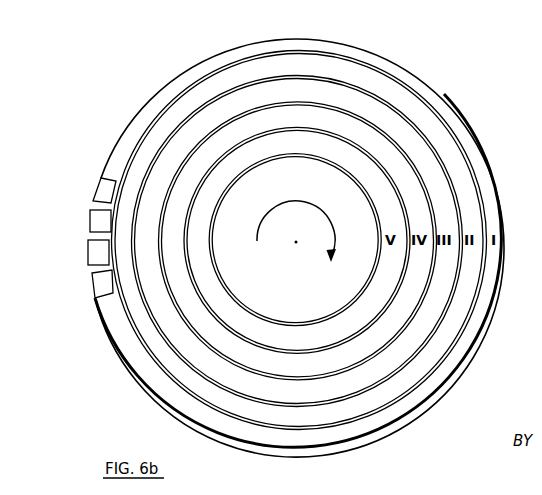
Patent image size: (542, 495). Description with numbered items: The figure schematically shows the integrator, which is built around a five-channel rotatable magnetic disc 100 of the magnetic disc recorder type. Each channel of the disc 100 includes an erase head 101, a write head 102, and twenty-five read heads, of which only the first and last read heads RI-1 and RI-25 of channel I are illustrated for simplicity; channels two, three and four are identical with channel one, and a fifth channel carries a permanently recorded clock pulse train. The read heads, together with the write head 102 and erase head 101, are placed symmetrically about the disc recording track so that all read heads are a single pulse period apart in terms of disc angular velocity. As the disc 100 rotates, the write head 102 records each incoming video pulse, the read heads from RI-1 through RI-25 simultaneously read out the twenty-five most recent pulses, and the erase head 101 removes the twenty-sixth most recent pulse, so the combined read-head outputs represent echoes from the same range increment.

The rotatable magnetic disc 100 is at (476, 158).
The erase head 101 is at (95, 248).
The write head 102 is at (100, 215).
The read head RI-1 is at (102, 188).
The read head RI-25 is at (108, 281).